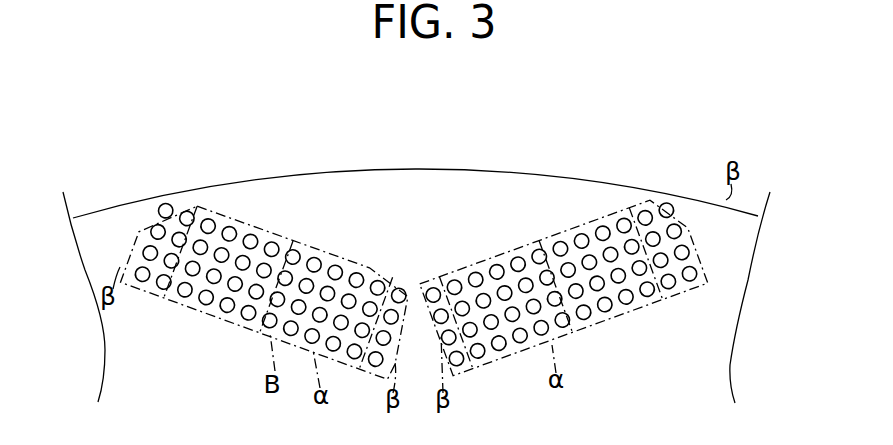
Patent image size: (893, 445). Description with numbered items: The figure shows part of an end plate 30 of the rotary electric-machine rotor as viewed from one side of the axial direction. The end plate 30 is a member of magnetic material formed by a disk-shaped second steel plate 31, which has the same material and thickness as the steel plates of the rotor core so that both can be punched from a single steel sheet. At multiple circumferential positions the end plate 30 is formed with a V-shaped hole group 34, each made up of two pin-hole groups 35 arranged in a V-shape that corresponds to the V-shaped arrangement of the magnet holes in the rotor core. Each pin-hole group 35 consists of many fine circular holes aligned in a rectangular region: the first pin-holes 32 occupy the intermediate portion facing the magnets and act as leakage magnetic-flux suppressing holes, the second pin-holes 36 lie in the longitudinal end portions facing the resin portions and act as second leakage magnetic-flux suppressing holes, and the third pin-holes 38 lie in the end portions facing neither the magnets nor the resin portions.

The end plate 30 is at (533, 173).
The second steel plate 31 is at (608, 182).
The first pin-hole 32 is at (300, 254).
The V-shaped hole group 34 is at (223, 317).
The pin-hole group 35 is at (250, 320).
The second pin-hole 36 is at (187, 212).
The third pin-hole 38 is at (161, 205).